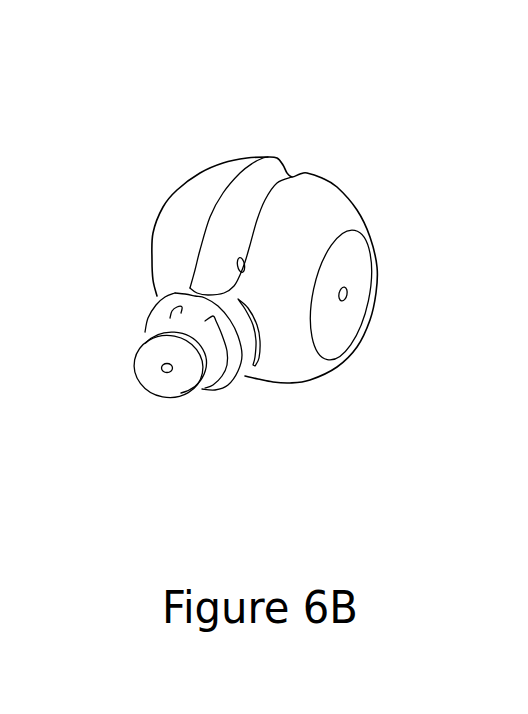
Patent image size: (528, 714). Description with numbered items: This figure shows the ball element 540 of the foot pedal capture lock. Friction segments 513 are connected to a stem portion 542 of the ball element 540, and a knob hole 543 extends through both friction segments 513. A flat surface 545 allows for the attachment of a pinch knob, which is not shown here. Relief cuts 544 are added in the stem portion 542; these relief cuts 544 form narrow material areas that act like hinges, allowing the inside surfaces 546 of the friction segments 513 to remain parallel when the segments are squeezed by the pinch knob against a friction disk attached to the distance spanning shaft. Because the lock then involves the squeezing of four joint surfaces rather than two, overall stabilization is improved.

The ball element 540 is at (355, 182).
The friction segments 513 is at (283, 230).
The inside surfaces 546 is at (275, 177).
The flat surface 545 is at (342, 322).
The knob hole 543 is at (347, 292).
The stem portion 542 is at (122, 325).
The relief cuts 544 is at (171, 309).